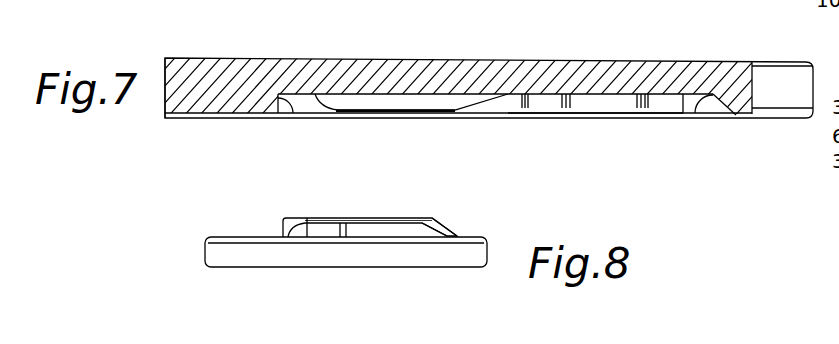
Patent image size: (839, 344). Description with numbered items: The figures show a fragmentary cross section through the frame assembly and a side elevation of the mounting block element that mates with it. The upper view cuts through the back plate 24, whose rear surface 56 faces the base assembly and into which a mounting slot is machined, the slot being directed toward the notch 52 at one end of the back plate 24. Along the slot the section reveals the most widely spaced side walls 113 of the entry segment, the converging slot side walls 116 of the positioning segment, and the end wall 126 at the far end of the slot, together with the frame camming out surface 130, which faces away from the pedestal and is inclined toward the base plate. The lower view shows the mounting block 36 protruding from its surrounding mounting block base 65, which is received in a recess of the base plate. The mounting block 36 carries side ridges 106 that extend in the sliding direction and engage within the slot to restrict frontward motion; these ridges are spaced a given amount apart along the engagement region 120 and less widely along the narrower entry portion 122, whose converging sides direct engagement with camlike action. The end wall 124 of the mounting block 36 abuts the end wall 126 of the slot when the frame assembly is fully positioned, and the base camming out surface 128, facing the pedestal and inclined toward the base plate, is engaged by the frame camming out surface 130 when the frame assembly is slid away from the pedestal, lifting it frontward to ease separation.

In FIG. 7, the back plate 24 is at (647, 61).
In FIG. 7, the notch 52 is at (753, 89).
In FIG. 7, the frame camming out surface 130 is at (722, 118).
In FIG. 7, the rear surface 56 is at (192, 124).
In FIG. 7, the end wall 126 is at (286, 113).
In FIG. 7, the slot side wall 116 is at (498, 115).
In FIG. 7, the side wall 113 is at (612, 117).
In FIG. 8, the mounting block base 65 is at (226, 268).
In FIG. 8, the side ridge 106 is at (416, 218).
In FIG. 8, the end wall 124 is at (282, 229).
In FIG. 8, the entry portion 122 is at (307, 218).
In FIG. 8, the engagement region 120 is at (357, 218).
In FIG. 8, the mounting block 36 is at (384, 218).
In FIG. 8, the base camming out surface 128 is at (458, 227).